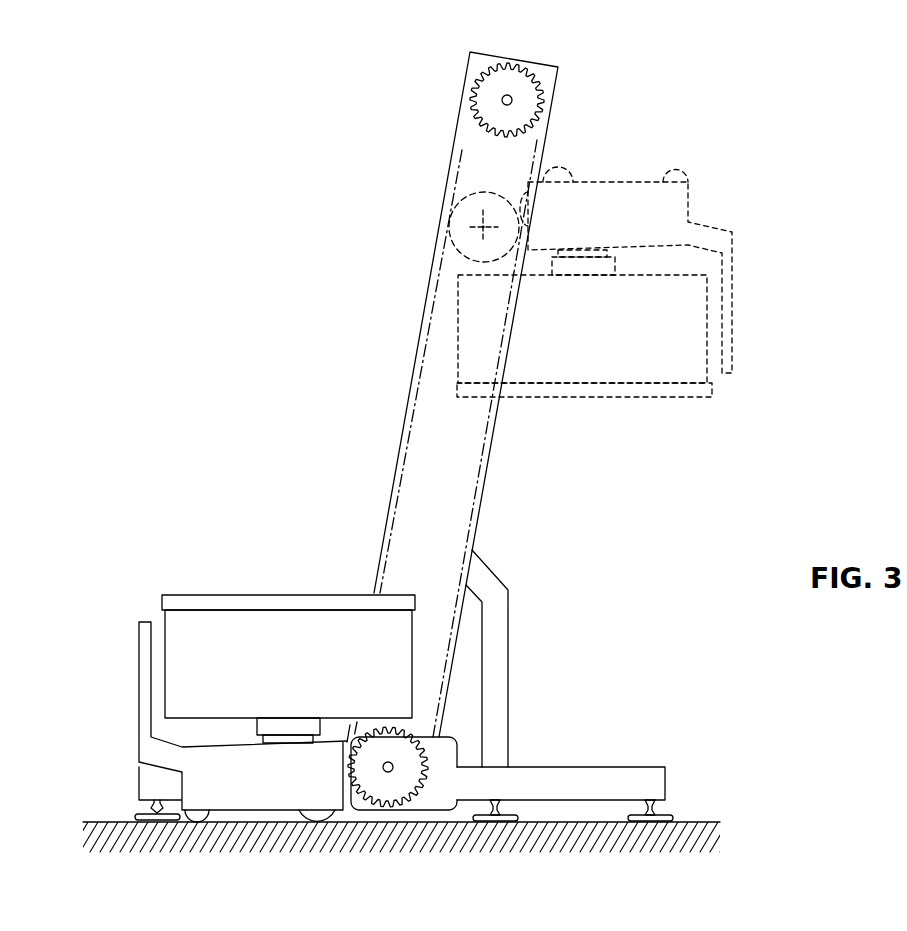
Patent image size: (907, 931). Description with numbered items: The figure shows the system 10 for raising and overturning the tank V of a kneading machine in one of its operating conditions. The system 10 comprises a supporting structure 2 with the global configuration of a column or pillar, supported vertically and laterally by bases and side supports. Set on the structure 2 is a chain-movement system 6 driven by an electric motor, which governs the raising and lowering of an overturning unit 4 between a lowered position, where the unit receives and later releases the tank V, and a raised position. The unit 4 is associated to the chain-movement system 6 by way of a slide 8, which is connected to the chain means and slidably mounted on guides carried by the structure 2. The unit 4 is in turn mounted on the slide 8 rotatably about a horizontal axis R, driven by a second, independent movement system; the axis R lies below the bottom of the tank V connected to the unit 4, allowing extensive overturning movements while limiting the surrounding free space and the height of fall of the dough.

The system 10 is at (316, 197).
The supporting structure 2 is at (386, 476).
The slide 8 is at (458, 255).
The horizontal axis R is at (477, 218).
The chain-movement system 6 is at (407, 728).
The overturning unit 4 is at (466, 748).
The tank V is at (208, 587).